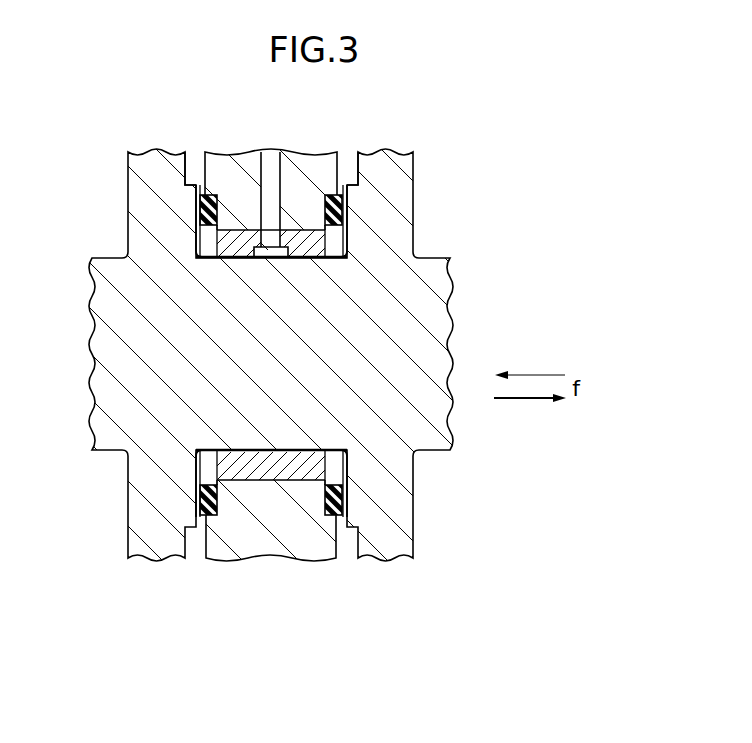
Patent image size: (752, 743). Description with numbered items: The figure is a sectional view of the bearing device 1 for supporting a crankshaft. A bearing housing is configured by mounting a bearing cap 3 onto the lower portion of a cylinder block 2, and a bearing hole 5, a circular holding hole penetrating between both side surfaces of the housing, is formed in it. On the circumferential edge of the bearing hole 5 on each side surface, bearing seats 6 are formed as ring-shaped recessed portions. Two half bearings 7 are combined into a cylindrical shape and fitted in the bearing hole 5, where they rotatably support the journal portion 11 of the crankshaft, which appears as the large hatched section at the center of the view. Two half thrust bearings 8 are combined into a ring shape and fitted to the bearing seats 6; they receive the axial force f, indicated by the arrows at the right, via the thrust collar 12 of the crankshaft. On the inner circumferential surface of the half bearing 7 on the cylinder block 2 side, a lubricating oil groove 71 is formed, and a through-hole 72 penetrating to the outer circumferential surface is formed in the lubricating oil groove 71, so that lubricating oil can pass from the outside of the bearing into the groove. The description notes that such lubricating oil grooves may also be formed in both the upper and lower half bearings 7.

The bearing device 1 is at (466, 177).
The cylinder block 2 is at (231, 160).
The bearing cap 3 is at (260, 557).
The bearing hole 5 is at (237, 234).
The bearing seat 6 is at (328, 206).
The half bearing 7 is at (330, 238).
The half thrust bearing 8 is at (208, 233).
The journal portion 11 is at (226, 385).
The thrust collar 12 is at (187, 182).
The lubricating oil groove 71 is at (272, 259).
The through-hole 72 is at (272, 240).